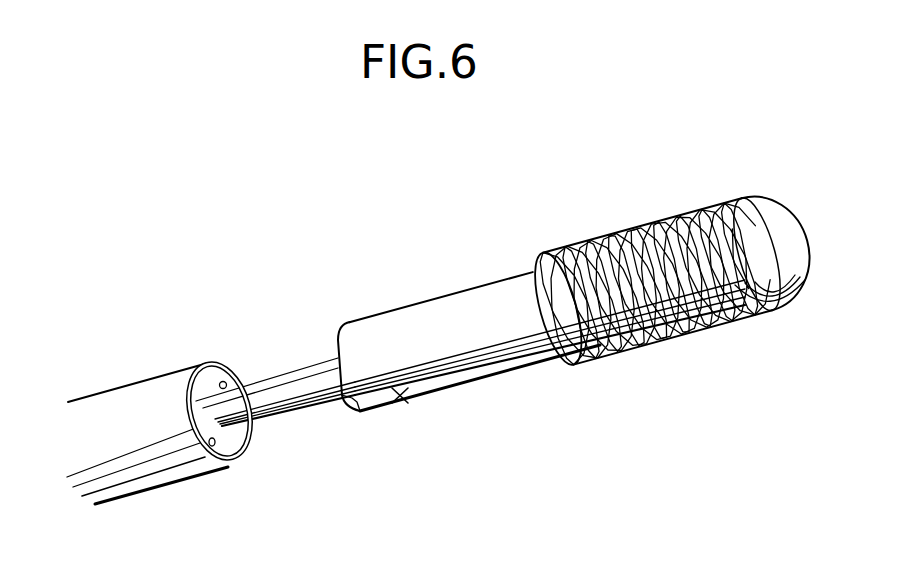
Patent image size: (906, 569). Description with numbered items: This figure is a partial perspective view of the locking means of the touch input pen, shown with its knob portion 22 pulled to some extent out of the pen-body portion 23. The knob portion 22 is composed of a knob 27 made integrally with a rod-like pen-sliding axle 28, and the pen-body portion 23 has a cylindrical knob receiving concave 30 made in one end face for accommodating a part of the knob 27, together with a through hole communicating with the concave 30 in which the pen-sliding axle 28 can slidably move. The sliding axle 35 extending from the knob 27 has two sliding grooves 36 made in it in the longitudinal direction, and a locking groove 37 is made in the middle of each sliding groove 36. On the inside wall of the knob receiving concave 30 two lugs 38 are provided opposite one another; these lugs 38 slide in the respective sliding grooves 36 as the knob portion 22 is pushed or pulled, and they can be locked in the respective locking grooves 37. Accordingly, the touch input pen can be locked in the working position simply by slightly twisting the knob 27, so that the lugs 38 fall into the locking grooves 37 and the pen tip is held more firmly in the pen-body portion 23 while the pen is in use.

The knob portion 22 is at (642, 218).
The pen-body portion 23 is at (130, 392).
The knob 27 is at (655, 348).
The pen-sliding axle 28 is at (305, 403).
The knob receiving concave 30 is at (207, 366).
The sliding axle 35 is at (468, 312).
The sliding grooves 36 is at (443, 378).
The locking groove 37 is at (397, 408).
The lugs 38 is at (232, 381).